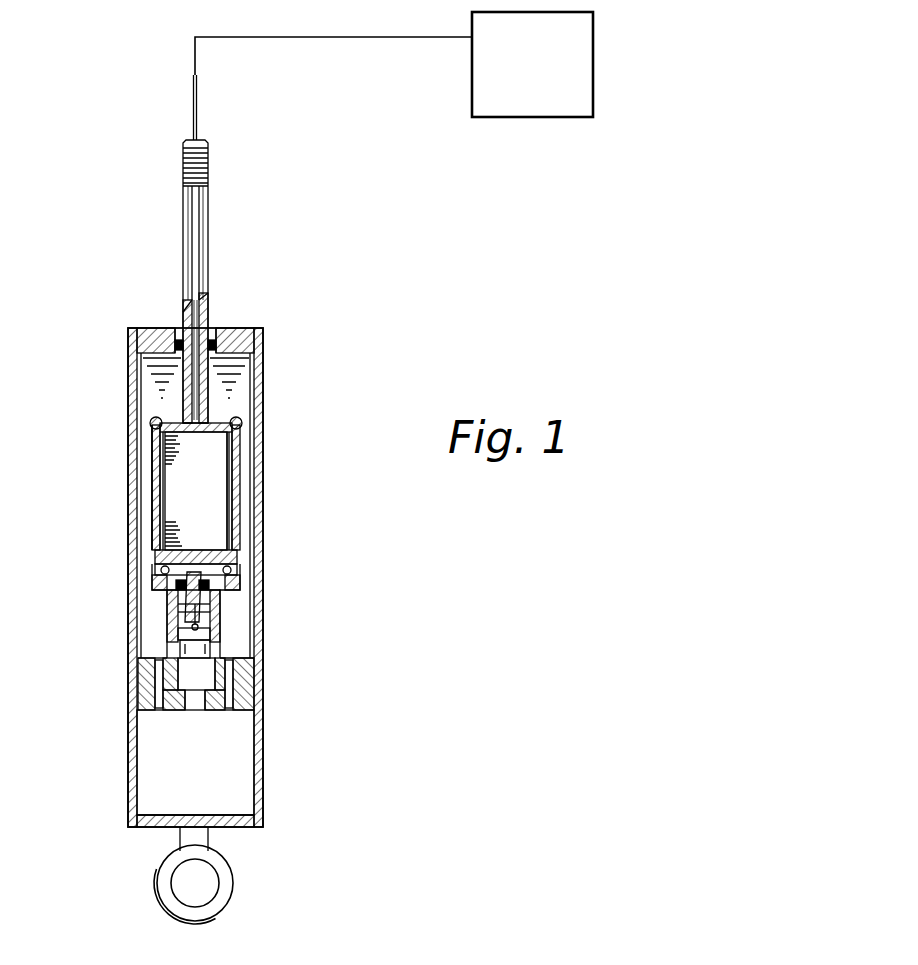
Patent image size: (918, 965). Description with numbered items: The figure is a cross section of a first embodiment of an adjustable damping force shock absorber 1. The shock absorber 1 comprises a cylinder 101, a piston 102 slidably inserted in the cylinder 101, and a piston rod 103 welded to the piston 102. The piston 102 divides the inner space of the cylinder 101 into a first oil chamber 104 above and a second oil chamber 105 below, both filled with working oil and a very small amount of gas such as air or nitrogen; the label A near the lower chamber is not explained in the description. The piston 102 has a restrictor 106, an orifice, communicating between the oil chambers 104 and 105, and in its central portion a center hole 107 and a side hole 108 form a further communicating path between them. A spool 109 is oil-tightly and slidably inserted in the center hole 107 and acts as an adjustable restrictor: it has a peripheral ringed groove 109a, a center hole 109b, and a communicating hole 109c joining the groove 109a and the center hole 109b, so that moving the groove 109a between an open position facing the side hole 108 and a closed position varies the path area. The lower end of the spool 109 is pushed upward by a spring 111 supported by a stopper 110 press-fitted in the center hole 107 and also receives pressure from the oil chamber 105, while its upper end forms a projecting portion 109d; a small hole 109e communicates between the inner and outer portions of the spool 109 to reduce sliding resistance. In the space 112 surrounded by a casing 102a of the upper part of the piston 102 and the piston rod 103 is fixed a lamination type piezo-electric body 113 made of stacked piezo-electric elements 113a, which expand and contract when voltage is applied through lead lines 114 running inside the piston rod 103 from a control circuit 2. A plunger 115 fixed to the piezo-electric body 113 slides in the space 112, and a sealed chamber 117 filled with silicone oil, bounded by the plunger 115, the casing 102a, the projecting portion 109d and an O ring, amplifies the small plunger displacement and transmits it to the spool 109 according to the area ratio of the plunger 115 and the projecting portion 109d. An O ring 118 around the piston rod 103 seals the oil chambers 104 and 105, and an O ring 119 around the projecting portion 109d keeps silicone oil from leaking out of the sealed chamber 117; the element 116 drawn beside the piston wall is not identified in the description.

The shock absorber 1 is at (120, 494).
The control circuit 2 is at (593, 58).
The cylinder 101 is at (257, 753).
The piston 102 is at (250, 517).
The casing 102a is at (168, 467).
The piston rod 103 is at (198, 245).
The first oil chamber 104 is at (233, 402).
The second oil chamber 105 is at (232, 777).
The restrictor 106 is at (237, 680).
The center hole 107 is at (190, 713).
The side hole 108 is at (197, 622).
The spool 109 is at (178, 618).
The peripheral ringed groove 109a is at (180, 640).
The center hole of spool 109b is at (187, 690).
The communicating hole 109c is at (182, 665).
The projecting portion 109d is at (208, 592).
The small hole 109e is at (178, 604).
The stopper 110 is at (240, 700).
The spring 111 is at (212, 650).
The space 112 is at (198, 473).
The piezo-electric body 113 is at (240, 440).
The piezo-electric elements 113a is at (160, 537).
The lead lines 114 is at (198, 113).
The plunger 115 is at (224, 500).
The liner 116 is at (236, 540).
The sealed chamber 117 is at (167, 590).
The O ring 118 is at (240, 328).
The O ring 119 is at (237, 568).
The gas chamber A is at (235, 800).